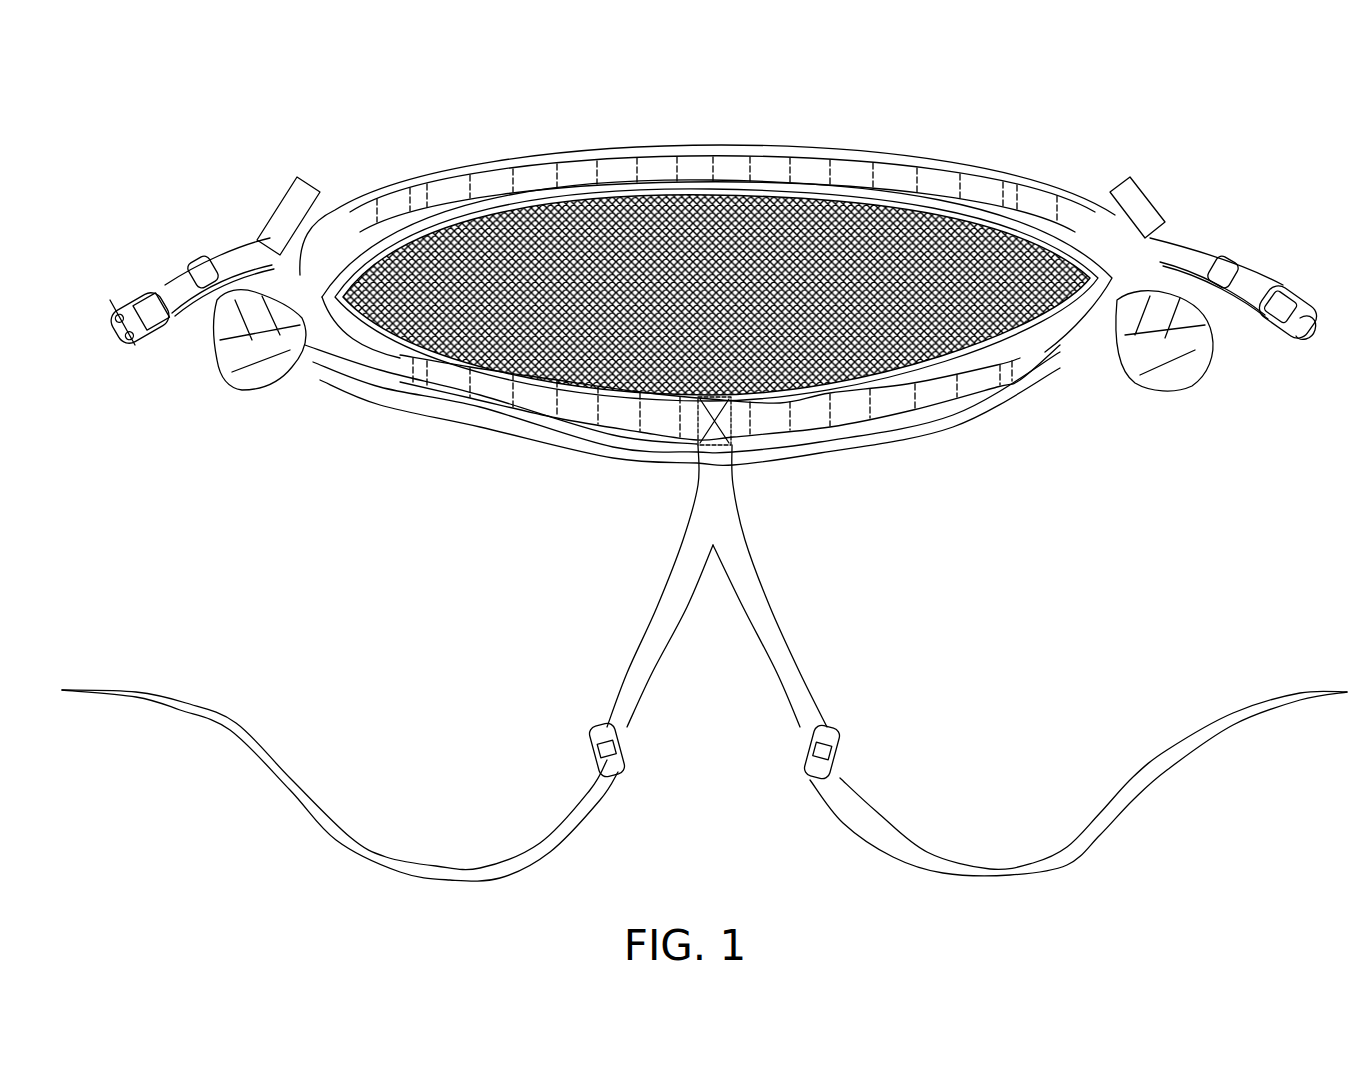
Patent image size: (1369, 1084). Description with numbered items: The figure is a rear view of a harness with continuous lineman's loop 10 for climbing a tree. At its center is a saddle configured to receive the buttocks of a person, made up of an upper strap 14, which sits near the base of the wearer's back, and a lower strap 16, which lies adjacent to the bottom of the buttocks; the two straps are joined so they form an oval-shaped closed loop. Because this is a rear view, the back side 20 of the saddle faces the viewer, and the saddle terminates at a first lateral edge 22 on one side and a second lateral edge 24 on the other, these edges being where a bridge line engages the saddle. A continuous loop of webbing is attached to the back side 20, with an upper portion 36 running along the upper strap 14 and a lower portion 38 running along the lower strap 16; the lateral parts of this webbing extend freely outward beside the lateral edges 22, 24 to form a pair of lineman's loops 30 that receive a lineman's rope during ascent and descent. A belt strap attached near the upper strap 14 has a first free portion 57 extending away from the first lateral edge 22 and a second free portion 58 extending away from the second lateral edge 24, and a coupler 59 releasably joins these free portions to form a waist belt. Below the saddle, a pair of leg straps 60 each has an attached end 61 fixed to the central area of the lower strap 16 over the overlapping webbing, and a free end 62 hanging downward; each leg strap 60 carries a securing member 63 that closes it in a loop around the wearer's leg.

The harness with continuous lineman's loop 10 is at (188, 128).
The upper strap 14 is at (943, 163).
The lower strap 16 is at (1040, 383).
The back side 20 is at (1153, 247).
The first lateral edge 22 is at (220, 380).
The second lateral edge 24 is at (1200, 373).
The lineman's loop 30 is at (263, 220).
The upper portion 36 is at (693, 170).
The lower portion 38 is at (850, 412).
The first free portion 57 is at (230, 250).
The second free portion 58 is at (1250, 283).
The coupler 59 is at (113, 307).
The leg strap 60 is at (775, 663).
The attached end 61 is at (698, 442).
The free end 62 is at (64, 687).
The securing member 63 is at (843, 763).